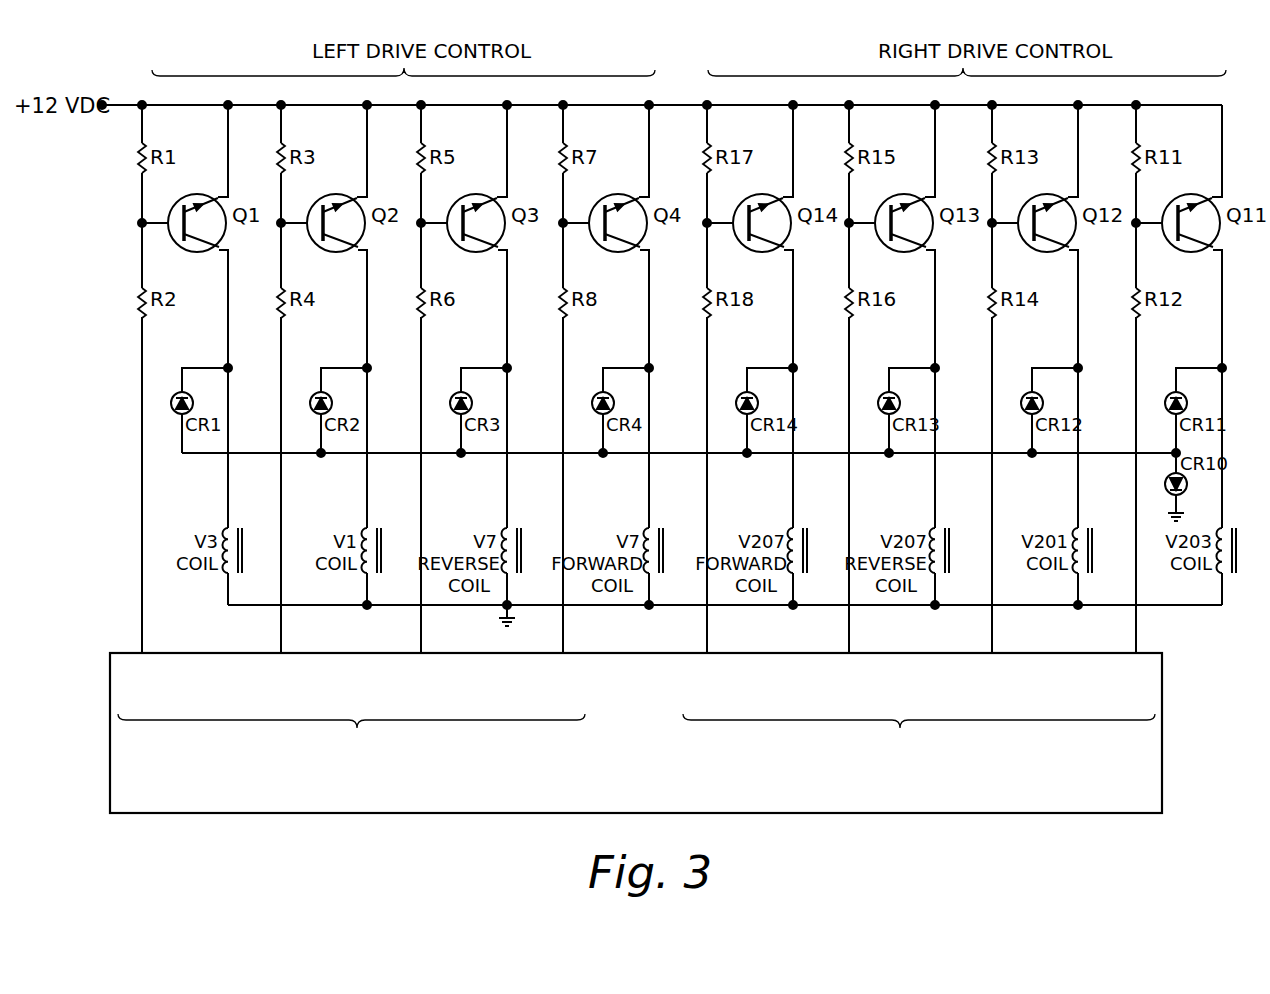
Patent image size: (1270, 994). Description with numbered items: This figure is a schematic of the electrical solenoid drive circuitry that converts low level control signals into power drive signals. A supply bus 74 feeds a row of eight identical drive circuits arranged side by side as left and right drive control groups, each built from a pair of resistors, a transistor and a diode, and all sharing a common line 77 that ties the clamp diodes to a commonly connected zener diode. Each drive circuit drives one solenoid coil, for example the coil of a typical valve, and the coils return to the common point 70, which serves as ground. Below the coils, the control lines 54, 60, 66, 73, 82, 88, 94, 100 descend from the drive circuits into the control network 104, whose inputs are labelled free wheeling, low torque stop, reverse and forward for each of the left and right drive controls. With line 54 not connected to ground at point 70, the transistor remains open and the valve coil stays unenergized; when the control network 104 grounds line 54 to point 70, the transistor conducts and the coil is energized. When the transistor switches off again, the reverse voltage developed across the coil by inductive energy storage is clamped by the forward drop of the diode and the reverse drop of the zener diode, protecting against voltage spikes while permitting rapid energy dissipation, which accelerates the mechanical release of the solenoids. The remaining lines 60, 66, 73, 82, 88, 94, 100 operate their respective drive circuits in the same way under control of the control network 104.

The +12 VDC supply bus 74 is at (683, 104).
The common return line 77 is at (671, 452).
The point (ground) 70 is at (1193, 606).
The line 54 is at (142, 626).
The left low torque stop control input 60 is at (281, 626).
The left reverse control input 66 is at (421, 626).
The left forward control input 73 is at (563, 626).
The right forward control input 82 is at (707, 626).
The right reverse control input 88 is at (849, 626).
The right low torque stop control input 94 is at (992, 626).
The right free wheeling control input 100 is at (1136, 622).
The control network 104 is at (1162, 728).